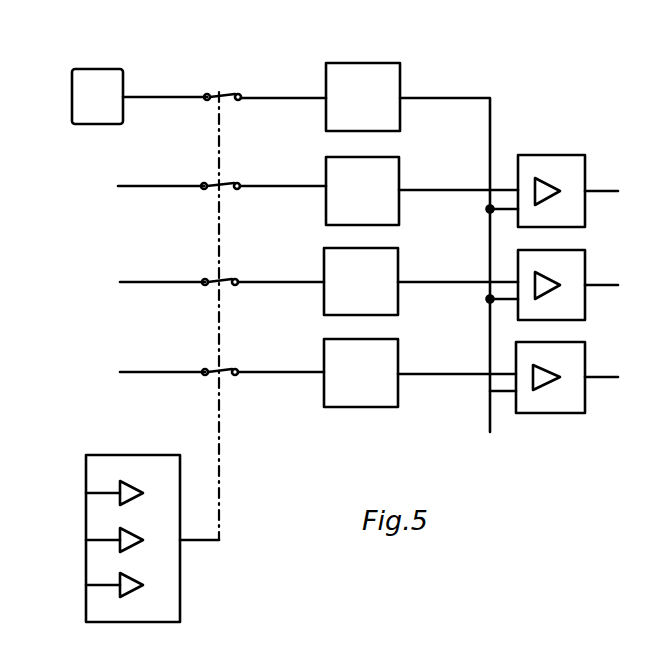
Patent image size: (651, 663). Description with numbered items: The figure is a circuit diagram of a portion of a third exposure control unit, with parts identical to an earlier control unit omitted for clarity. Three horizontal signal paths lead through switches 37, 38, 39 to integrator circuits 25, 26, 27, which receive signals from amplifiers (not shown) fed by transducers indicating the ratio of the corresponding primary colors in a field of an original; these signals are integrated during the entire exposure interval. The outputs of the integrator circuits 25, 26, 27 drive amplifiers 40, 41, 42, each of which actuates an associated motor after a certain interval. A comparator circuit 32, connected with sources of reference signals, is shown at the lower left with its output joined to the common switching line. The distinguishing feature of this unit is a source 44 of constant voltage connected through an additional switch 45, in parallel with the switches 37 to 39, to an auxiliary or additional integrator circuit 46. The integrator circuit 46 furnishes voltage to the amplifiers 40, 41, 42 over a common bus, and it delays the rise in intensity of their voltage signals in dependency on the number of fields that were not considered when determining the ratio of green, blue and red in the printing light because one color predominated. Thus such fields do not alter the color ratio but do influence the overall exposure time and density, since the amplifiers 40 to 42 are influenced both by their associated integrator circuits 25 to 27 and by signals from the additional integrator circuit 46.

The source of constant voltage 44 is at (106, 70).
The additional switch 45 is at (226, 92).
The additional integrator circuit 46 is at (362, 68).
The switch 39 is at (218, 183).
The switch 38 is at (216, 279).
The switch 37 is at (216, 369).
The integrator circuit 27 is at (390, 178).
The integrator circuit 26 is at (386, 270).
The integrator circuit 25 is at (375, 404).
The amplifier 42 is at (582, 170).
The amplifier 41 is at (582, 272).
The amplifier 40 is at (578, 352).
The comparator circuit 32 is at (170, 582).